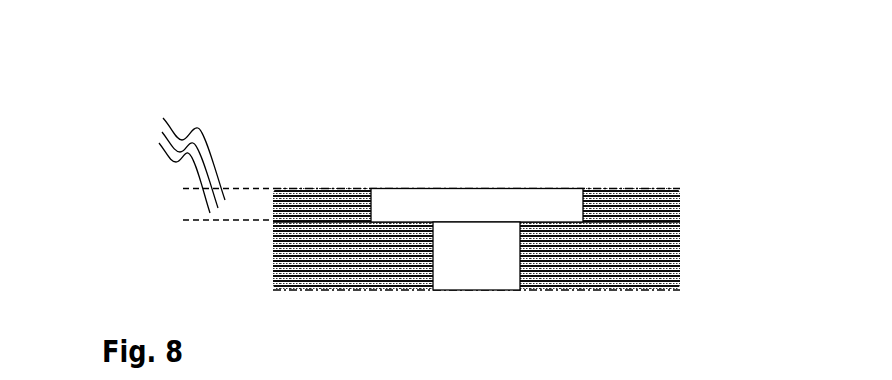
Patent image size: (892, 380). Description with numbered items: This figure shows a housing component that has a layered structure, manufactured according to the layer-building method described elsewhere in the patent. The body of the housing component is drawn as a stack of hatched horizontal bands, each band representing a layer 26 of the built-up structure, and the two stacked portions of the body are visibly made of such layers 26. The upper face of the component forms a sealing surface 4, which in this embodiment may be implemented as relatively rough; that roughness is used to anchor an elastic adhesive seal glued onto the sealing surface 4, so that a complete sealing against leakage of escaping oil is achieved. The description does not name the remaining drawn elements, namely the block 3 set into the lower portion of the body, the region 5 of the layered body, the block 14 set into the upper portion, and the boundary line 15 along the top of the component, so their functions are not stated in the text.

The lower contact block 3 is at (487, 280).
The sealing surface 4 is at (404, 221).
The substrate body 5 is at (668, 243).
The contact pad 14 is at (555, 198).
The top surface 15 is at (635, 188).
The layer 26 is at (195, 163).